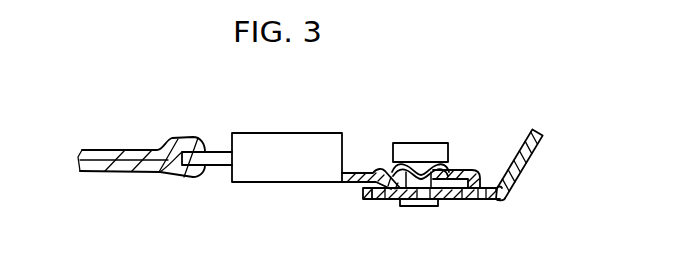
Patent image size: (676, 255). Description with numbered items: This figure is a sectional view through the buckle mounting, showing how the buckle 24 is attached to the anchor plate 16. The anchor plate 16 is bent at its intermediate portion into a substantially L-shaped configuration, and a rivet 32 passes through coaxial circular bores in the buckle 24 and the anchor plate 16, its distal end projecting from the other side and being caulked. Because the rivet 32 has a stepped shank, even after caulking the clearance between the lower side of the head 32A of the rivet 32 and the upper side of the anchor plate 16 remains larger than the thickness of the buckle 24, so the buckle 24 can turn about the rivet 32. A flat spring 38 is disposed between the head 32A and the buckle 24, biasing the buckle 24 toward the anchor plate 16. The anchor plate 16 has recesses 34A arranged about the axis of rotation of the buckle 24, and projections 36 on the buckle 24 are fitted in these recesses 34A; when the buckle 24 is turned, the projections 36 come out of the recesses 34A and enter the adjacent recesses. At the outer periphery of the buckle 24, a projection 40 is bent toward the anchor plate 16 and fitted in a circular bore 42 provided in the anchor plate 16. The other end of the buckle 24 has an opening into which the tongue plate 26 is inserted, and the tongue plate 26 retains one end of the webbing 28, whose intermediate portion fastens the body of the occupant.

The anchor plate 16 is at (528, 137).
The buckle 24 is at (360, 168).
The tongue plate 26 is at (215, 172).
The webbing 28 is at (140, 149).
The rivet 32 is at (413, 143).
The head of the rivet 32A is at (433, 150).
The recesses 34A is at (383, 203).
The projections 36 is at (377, 199).
The flat spring 38 is at (452, 168).
The projection 40 is at (502, 203).
The circular bore 42 is at (477, 203).